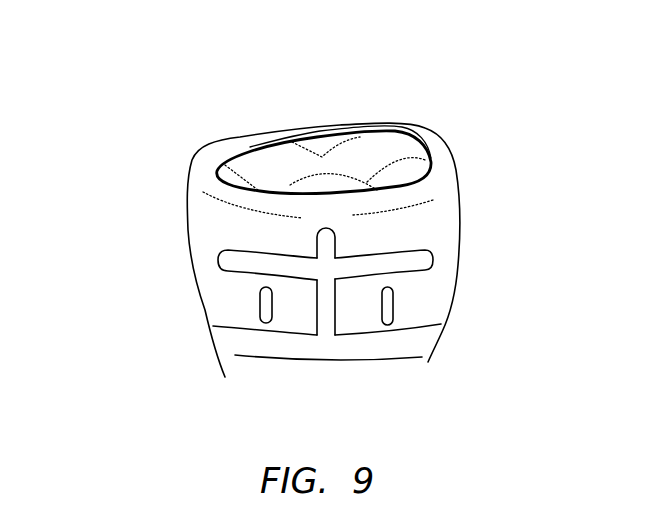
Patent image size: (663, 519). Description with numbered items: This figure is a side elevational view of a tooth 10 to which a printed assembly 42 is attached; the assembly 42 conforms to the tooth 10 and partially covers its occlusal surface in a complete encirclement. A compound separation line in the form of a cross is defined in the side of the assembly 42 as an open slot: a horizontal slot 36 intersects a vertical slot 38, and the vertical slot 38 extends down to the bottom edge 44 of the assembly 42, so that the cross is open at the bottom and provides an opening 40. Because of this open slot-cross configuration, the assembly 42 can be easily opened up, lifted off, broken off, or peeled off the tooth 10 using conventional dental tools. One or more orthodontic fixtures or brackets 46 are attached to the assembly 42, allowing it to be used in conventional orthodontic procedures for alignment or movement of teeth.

The tooth 10 is at (290, 162).
The horizontal slot 36 is at (392, 270).
The vertical slot 38 is at (322, 247).
The opening 40 is at (325, 328).
The assembly 42 is at (212, 294).
The bottom edge 44 is at (390, 338).
The orthodontic fixtures or brackets 46 is at (260, 318).